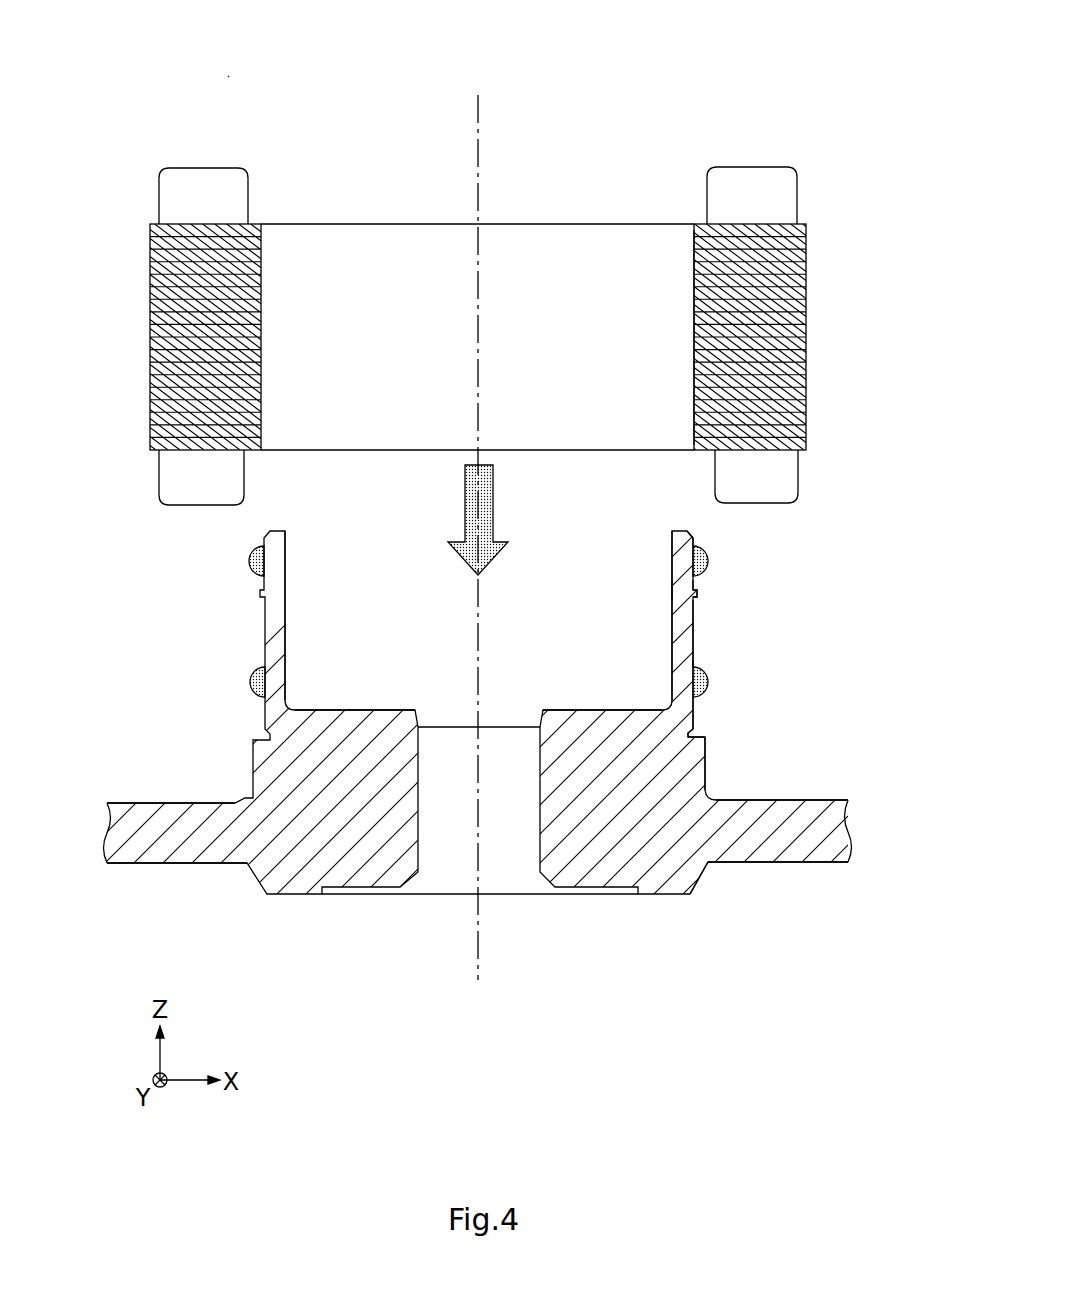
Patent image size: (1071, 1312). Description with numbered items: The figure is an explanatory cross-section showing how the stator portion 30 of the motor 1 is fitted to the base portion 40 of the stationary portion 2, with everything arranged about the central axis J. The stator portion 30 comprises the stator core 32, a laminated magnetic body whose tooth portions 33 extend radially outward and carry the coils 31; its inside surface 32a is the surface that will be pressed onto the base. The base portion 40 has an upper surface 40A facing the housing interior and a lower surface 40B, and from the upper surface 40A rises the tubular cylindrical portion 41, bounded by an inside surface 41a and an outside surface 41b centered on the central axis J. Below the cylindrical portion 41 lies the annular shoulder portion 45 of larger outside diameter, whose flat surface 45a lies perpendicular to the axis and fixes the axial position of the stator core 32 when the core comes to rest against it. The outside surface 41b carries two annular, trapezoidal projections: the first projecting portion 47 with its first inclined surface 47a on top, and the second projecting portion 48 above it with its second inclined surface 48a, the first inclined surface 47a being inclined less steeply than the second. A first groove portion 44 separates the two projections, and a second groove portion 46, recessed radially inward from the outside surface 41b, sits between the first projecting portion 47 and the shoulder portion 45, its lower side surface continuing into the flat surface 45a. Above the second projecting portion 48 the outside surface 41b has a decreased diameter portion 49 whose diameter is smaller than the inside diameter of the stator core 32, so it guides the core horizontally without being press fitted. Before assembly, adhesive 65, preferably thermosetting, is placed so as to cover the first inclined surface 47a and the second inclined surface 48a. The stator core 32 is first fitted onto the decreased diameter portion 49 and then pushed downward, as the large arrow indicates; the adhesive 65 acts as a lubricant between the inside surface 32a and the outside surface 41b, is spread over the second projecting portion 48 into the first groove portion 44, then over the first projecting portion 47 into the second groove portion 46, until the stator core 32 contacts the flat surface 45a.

The motor 1 is at (222, 70).
The central axis J is at (473, 116).
The stationary portion 2 is at (796, 876).
The stator portion 30 is at (805, 155).
The coils 31 is at (752, 168).
The stator core 32 is at (752, 222).
The inside surface of the stator core 32a is at (694, 280).
The tooth portions 33 is at (806, 298).
The base portion 40 is at (684, 870).
The upper surface 40A is at (587, 700).
The lower surface 40B is at (753, 875).
The cylindrical portion 41 is at (662, 520).
The inside surface 41a is at (672, 590).
The outside surface 41b is at (705, 590).
The first groove portion 44 is at (697, 642).
The shoulder portion 45 is at (718, 772).
The flat surface 45a is at (712, 733).
The second groove portion 46 is at (712, 722).
The first projecting portion 47 is at (706, 703).
The first inclined surface 47a is at (709, 672).
The second projecting portion 48 is at (708, 598).
The second inclined surface 48a is at (708, 550).
The decreased diameter portion 49 is at (700, 542).
The adhesive 65 is at (709, 562).